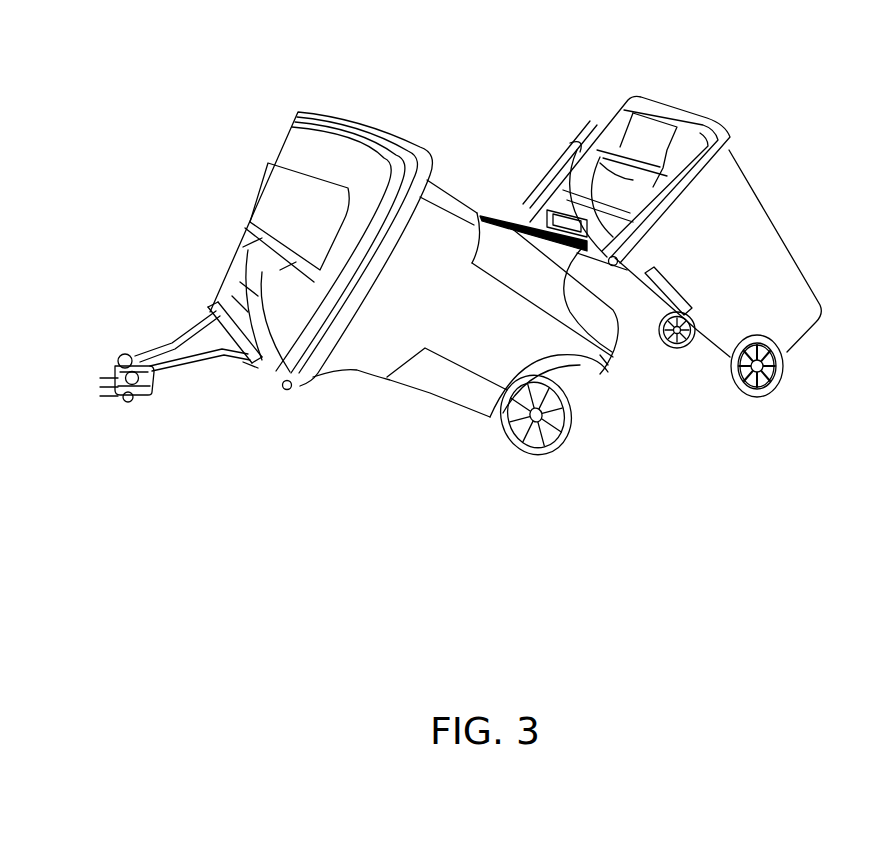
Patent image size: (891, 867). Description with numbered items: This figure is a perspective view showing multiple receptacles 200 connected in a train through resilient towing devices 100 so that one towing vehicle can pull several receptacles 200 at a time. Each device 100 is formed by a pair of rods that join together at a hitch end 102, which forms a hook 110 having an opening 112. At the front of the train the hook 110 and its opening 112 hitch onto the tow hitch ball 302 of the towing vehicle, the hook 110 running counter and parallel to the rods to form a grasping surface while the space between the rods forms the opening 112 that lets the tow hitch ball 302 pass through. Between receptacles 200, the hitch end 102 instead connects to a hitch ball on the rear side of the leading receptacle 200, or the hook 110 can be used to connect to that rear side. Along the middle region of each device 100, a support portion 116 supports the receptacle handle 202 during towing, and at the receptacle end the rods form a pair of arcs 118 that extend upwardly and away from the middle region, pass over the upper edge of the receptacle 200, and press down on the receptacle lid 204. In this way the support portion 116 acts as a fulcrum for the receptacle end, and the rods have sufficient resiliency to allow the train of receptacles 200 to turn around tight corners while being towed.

The device 100 is at (173, 298).
The hitch end 102 is at (128, 350).
The hook 110 is at (107, 402).
The opening 112 is at (137, 388).
The support portion 116 is at (242, 367).
The pair of arcs 118 is at (245, 255).
The receptacle 200 is at (390, 104).
The receptacle handle 202 is at (276, 378).
The receptacle lid 204 is at (268, 205).
The tow hitch ball 302 is at (118, 355).